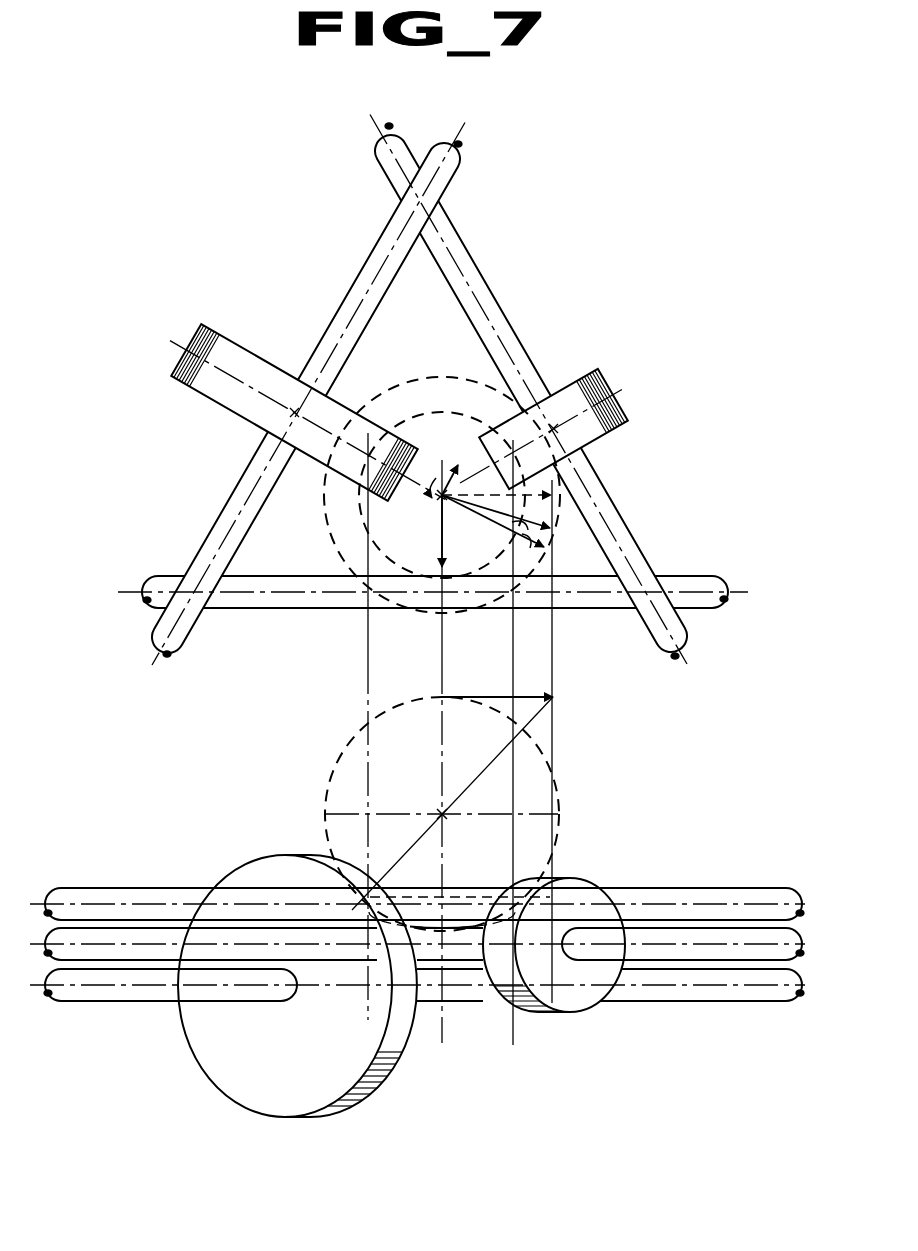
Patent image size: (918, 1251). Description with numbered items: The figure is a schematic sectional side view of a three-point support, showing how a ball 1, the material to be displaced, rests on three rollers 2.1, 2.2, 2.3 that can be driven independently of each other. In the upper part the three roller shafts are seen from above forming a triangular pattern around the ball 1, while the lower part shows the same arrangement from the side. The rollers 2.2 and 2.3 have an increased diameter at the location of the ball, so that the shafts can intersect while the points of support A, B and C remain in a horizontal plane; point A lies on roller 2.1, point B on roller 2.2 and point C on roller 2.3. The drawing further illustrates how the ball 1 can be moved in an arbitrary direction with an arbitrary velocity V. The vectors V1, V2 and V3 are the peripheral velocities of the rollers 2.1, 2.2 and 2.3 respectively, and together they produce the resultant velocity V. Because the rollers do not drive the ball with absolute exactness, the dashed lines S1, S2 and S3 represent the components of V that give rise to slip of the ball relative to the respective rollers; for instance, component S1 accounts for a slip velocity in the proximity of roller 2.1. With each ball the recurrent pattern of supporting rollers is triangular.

The ball 1 is at (414, 370).
The roller 2.1 is at (707, 579).
The roller 2.2 is at (396, 176).
The roller 2.3 is at (165, 626).
The point of support A is at (446, 582).
The point of support B is at (557, 429).
The point of support C is at (364, 454).
The velocity V is at (518, 605).
The peripheral velocity V1 is at (490, 574).
The peripheral velocity V2 is at (476, 470).
The peripheral velocity V3 is at (517, 535).
The slip component S1 is at (531, 491).
The slip component S2 is at (452, 515).
The slip component S3 is at (447, 475).